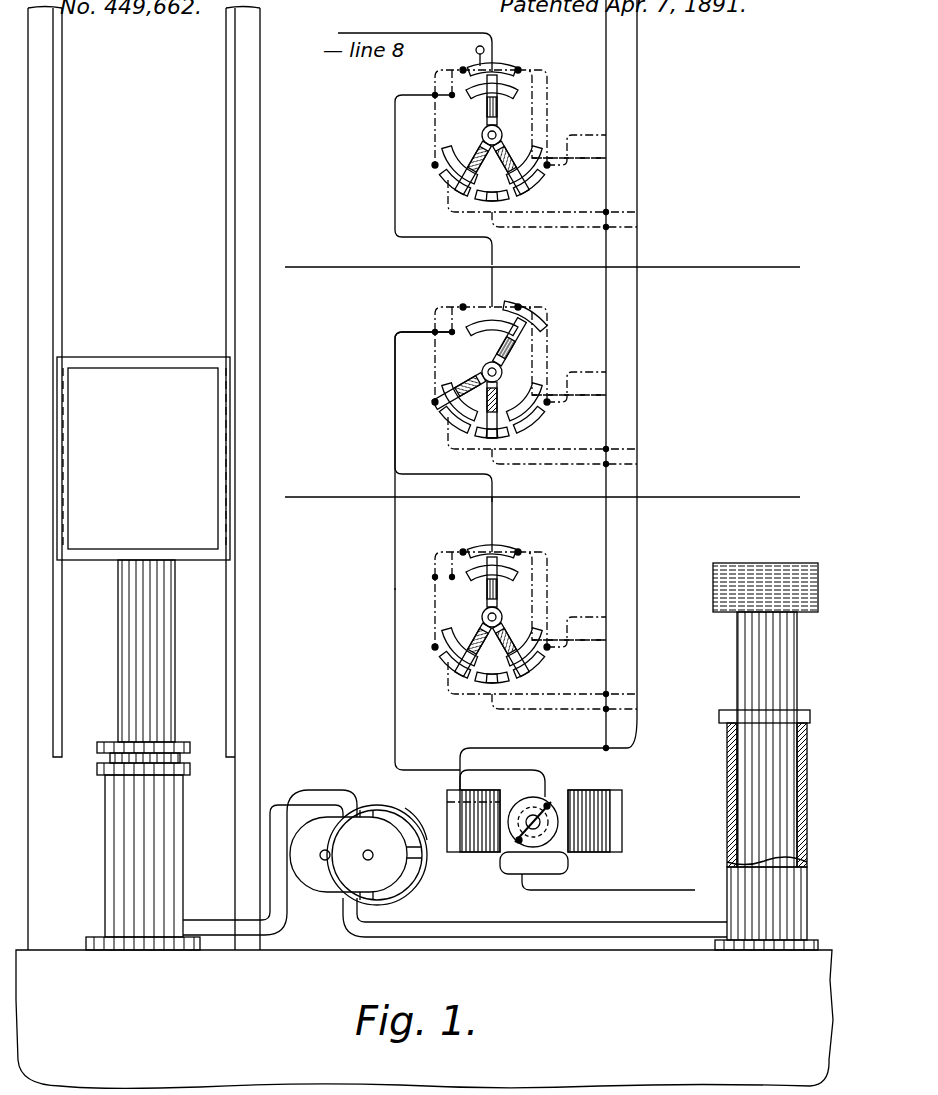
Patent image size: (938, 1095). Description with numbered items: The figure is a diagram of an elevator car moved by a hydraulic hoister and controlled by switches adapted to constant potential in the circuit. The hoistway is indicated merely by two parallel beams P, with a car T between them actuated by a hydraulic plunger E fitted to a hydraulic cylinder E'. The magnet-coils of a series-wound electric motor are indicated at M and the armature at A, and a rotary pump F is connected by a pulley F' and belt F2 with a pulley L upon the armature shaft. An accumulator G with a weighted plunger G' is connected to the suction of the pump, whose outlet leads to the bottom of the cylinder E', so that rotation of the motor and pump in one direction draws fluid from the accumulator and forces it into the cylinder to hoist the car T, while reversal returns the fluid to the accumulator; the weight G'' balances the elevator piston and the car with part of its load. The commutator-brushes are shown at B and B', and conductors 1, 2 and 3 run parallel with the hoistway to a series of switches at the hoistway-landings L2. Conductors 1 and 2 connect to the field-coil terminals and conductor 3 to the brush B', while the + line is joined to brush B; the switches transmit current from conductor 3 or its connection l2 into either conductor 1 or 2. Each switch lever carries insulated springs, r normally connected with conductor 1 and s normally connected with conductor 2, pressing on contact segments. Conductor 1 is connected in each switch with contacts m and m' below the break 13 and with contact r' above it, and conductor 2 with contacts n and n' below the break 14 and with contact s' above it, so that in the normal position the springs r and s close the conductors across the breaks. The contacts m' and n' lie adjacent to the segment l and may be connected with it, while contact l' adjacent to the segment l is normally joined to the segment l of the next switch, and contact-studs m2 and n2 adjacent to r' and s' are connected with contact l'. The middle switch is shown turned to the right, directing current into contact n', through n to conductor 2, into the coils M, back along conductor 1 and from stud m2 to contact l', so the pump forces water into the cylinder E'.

The parallel beams P is at (144, 479).
The car T is at (156, 371).
The hydraulic plunger E is at (146, 667).
The hydraulic cylinder E' is at (147, 862).
The rotary pump F is at (348, 854).
The pulley F' is at (413, 862).
The belt F2 is at (407, 808).
The magnet-coils M is at (534, 811).
The armature A is at (509, 806).
The commutator-brush B is at (534, 855).
The commutator-brush B' is at (542, 804).
The pulley L is at (548, 846).
The accumulator G is at (774, 900).
The weighted plunger G' is at (757, 760).
The weight G'' is at (765, 715).
The segment l is at (492, 376).
The contact l' is at (507, 298).
The connection l2 is at (432, 342).
The contact m is at (462, 401).
The contact m' is at (476, 344).
The contact-stud m2 is at (435, 647).
The contact n is at (524, 401).
The contact n' is at (560, 346).
The contact-stud n2 is at (548, 647).
The spring r is at (451, 446).
The contact r' is at (447, 426).
The spring s is at (513, 439).
The contact s' is at (538, 426).
The conductor 1 is at (640, 100).
The conductor 2 is at (604, 100).
The conductor 3 is at (395, 676).
The break 13 is at (643, 704).
The break 14 is at (611, 633).
The hoistway-landings L2 is at (542, 367).